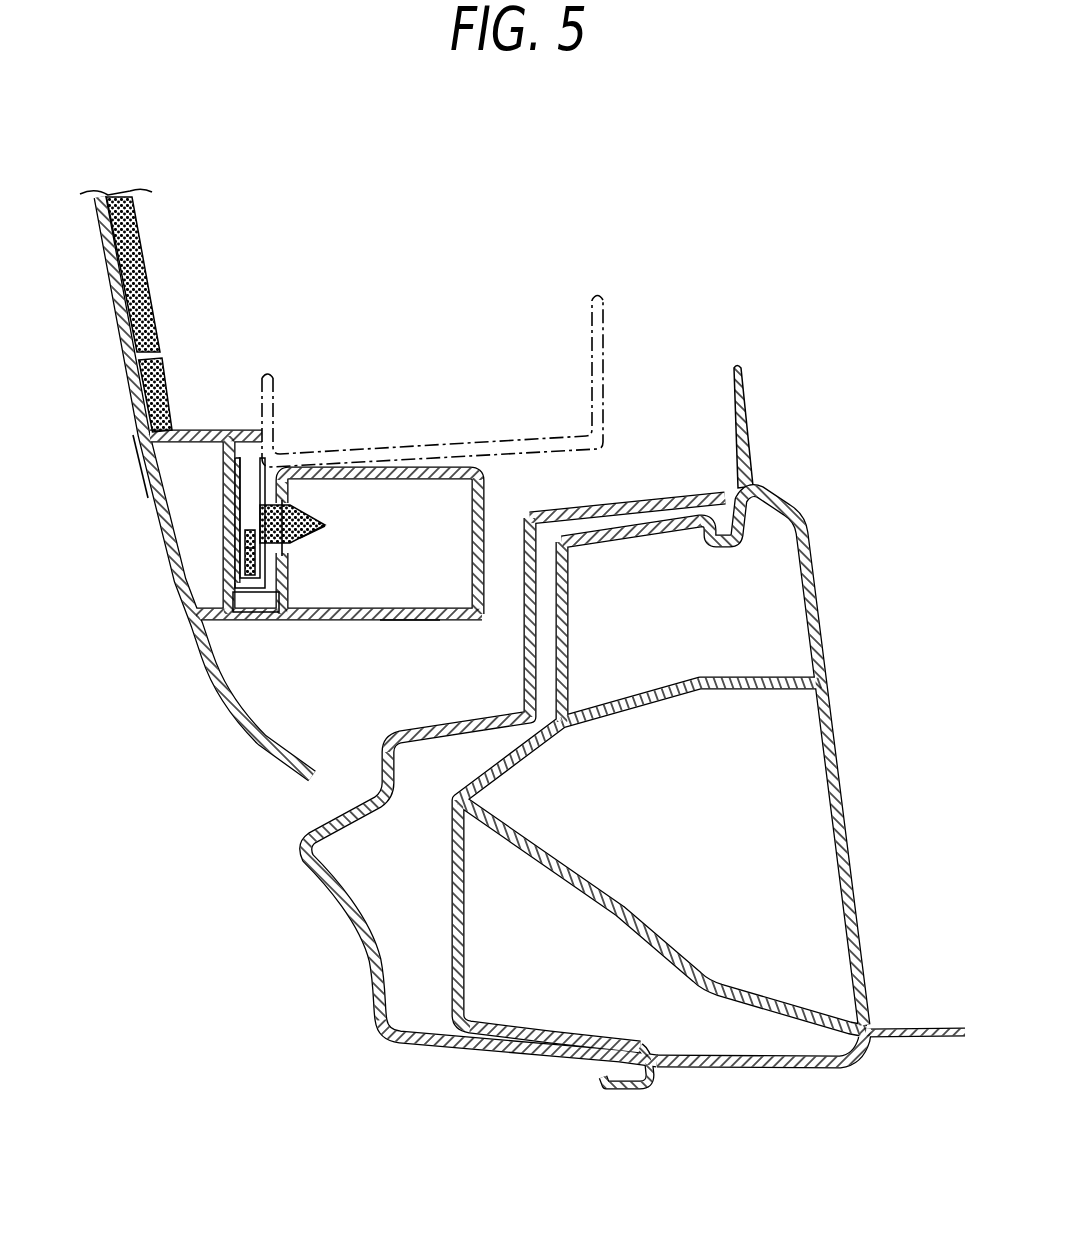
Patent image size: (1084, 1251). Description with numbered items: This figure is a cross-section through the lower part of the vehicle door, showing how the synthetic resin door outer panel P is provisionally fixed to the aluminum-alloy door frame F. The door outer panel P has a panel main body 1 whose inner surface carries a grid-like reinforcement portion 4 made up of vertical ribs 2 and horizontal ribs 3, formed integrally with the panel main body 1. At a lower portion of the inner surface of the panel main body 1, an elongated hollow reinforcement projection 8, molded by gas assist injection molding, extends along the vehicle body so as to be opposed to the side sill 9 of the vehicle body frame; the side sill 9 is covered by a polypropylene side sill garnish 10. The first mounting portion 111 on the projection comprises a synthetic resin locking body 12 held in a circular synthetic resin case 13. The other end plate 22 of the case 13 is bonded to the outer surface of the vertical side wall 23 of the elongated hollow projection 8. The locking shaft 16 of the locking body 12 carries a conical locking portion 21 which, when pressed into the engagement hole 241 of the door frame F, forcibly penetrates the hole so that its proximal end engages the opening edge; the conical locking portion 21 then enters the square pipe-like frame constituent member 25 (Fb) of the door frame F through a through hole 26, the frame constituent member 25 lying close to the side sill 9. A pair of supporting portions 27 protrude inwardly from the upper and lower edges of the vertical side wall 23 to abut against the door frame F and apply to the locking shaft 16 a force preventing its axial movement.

The panel main body 1 is at (193, 660).
The vertical ribs 2 is at (131, 264).
The horizontal ribs 3 is at (150, 345).
The grid-like reinforcement portion 4 is at (140, 215).
The elongated hollow reinforcement projection 8 is at (197, 428).
The side sill 9 is at (811, 600).
The side sill garnish 10 is at (362, 937).
The locking body 12 is at (331, 545).
The case 13 is at (262, 444).
The locking shaft 16 is at (321, 546).
The conical locking portion 21 is at (340, 522).
The other end plate 22 is at (225, 518).
The vertical side wall 23 is at (222, 595).
The frame constituent member 25 is at (410, 621).
The through hole 26 is at (305, 547).
The supporting portions 27 is at (257, 446).
The first mounting portion 111 is at (309, 503).
The engagement hole 241 is at (250, 548).
The door outer panel P is at (140, 496).
The door frame F is at (612, 345).